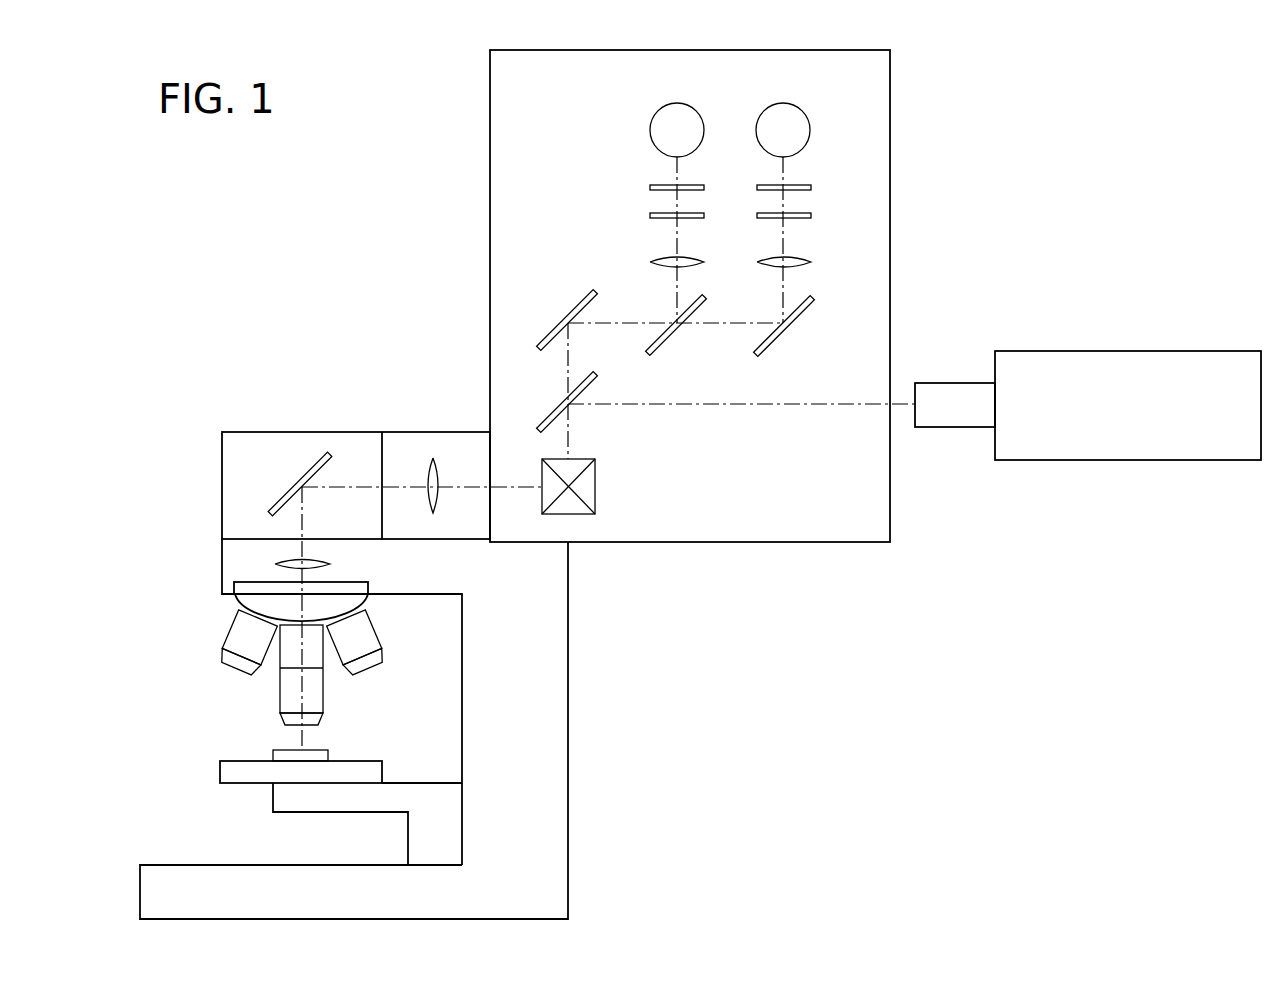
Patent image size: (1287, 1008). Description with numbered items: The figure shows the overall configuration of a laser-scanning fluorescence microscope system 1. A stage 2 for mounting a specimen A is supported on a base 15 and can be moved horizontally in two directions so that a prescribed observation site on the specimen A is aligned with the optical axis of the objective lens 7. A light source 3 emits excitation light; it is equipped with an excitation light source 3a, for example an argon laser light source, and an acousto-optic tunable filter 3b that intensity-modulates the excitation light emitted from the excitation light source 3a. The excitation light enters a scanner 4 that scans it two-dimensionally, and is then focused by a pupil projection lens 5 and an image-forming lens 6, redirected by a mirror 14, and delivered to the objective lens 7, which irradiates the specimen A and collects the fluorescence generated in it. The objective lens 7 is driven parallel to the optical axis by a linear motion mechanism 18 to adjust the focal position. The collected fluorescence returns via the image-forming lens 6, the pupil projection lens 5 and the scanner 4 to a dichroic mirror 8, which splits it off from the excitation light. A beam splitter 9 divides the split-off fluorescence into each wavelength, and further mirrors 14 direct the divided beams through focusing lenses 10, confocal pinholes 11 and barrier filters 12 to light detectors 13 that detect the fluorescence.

The microscope system 1 is at (1086, 110).
The stage 2 is at (220, 768).
The light source 3 is at (1088, 483).
The excitation light source 3a is at (1128, 462).
The acousto-optic tunable filter 3b is at (953, 429).
The scanner 4 is at (597, 487).
The pupil projection lens 5 is at (433, 458).
The image-forming lens 6 is at (273, 563).
The objective lens 7 is at (317, 692).
The dichroic mirror 8 is at (553, 405).
The beam splitter 9 is at (668, 338).
The focusing lens 10 is at (650, 262).
The confocal pinhole 11 is at (650, 215).
The barrier filter 12 is at (650, 187).
The light detector 13 is at (650, 128).
The mirror 14 is at (552, 330).
The base 15 is at (548, 848).
The linear motion mechanism 18 is at (278, 647).
The specimen A is at (330, 755).